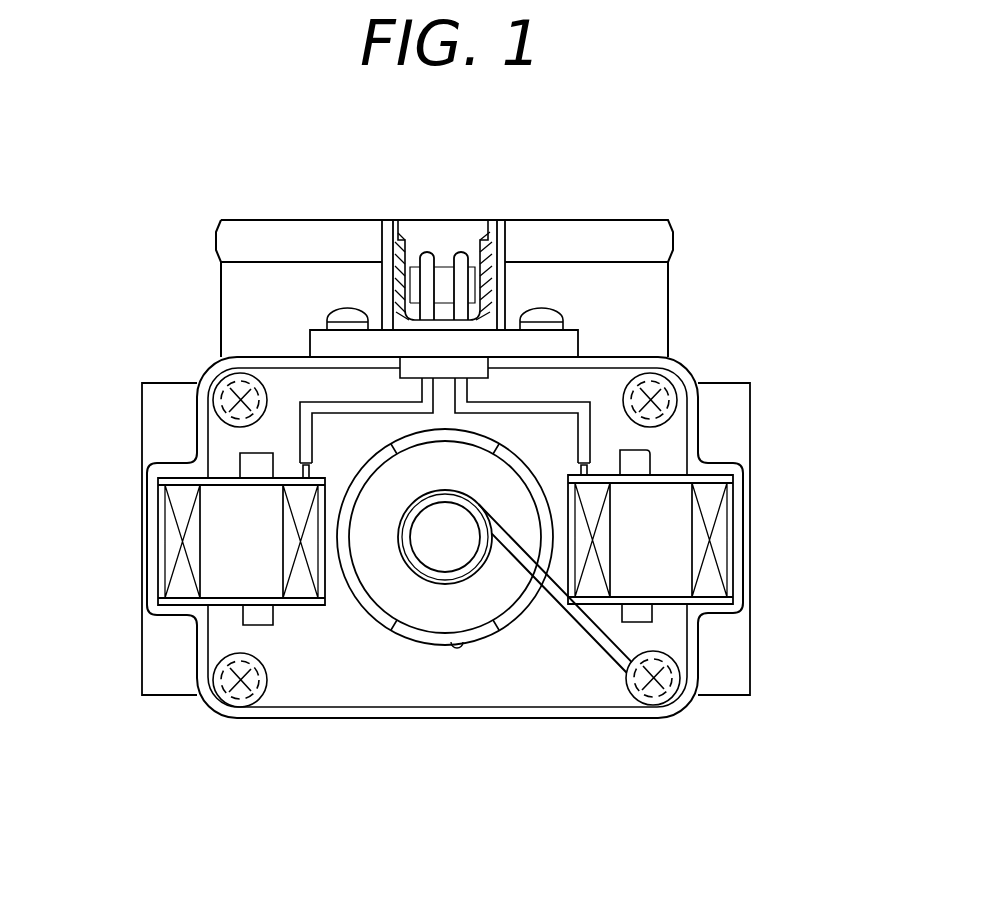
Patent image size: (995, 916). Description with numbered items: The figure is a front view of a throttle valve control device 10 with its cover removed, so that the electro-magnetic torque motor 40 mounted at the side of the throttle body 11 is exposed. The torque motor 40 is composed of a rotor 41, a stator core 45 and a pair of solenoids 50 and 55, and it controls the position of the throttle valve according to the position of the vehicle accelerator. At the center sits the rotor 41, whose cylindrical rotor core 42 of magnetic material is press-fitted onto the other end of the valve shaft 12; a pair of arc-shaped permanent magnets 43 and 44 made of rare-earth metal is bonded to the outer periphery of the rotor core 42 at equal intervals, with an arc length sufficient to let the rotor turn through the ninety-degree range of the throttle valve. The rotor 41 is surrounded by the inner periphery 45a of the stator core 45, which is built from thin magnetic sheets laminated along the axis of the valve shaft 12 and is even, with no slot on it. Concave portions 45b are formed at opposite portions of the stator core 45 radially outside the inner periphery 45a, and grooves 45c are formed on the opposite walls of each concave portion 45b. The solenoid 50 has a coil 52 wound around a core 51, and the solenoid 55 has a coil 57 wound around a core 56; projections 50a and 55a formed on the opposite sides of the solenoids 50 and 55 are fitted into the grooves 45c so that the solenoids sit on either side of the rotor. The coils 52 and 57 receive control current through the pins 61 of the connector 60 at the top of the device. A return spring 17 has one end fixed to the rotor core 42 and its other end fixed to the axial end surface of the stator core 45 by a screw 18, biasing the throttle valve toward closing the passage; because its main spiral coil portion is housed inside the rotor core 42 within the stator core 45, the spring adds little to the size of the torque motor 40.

The throttle valve control device 10 is at (679, 234).
The throttle body 11 is at (214, 373).
The valve shaft 12 is at (448, 560).
The return spring 17 is at (509, 621).
The screw 18 is at (662, 684).
The electro-magnetic torque motor 40 is at (237, 721).
The rotor 41 is at (425, 639).
The rotor core 42 is at (417, 616).
The permanent magnet 43 is at (378, 619).
The permanent magnet 44 is at (478, 563).
The stator core 45 is at (611, 691).
The inner periphery 45a is at (452, 646).
The concave portion 45b is at (323, 550).
The groove 45c is at (258, 482).
The solenoid 50 is at (443, 603).
The projection 50a is at (248, 466).
The core 51 is at (215, 530).
The coil 52 is at (172, 557).
The solenoid 55 is at (730, 545).
The projection 55a is at (656, 465).
The core 56 is at (676, 537).
The coil 57 is at (729, 567).
The connector 60 is at (507, 243).
The connector pin 61 is at (425, 250).